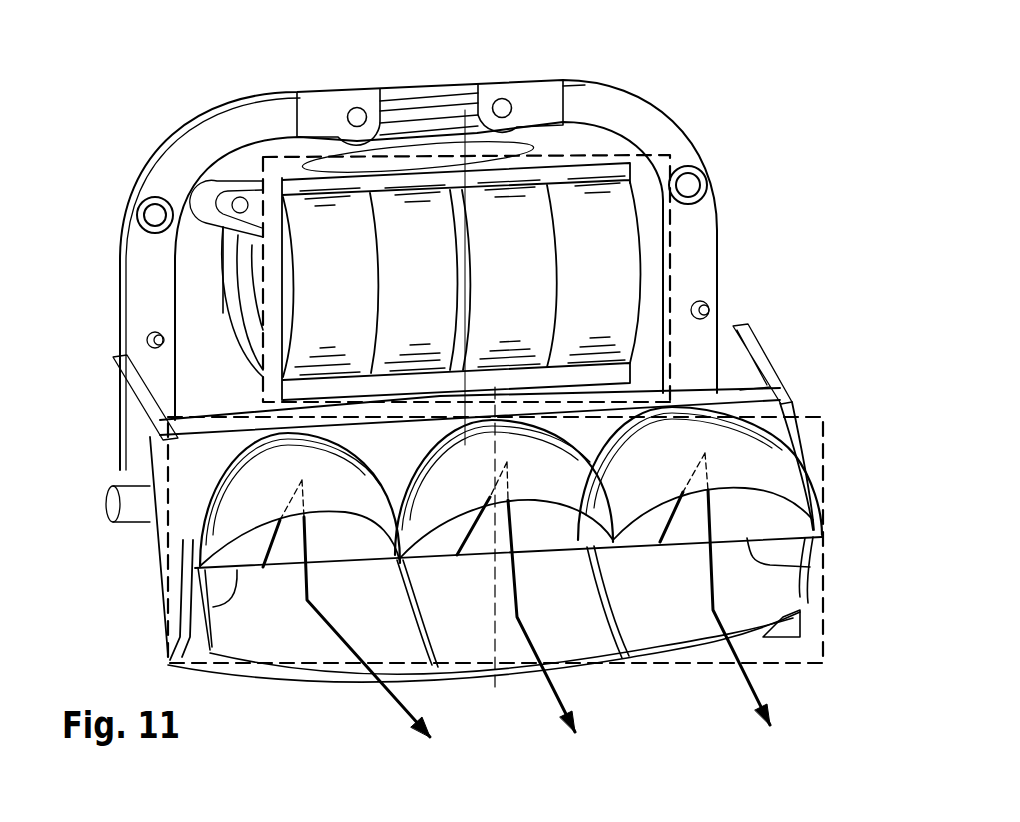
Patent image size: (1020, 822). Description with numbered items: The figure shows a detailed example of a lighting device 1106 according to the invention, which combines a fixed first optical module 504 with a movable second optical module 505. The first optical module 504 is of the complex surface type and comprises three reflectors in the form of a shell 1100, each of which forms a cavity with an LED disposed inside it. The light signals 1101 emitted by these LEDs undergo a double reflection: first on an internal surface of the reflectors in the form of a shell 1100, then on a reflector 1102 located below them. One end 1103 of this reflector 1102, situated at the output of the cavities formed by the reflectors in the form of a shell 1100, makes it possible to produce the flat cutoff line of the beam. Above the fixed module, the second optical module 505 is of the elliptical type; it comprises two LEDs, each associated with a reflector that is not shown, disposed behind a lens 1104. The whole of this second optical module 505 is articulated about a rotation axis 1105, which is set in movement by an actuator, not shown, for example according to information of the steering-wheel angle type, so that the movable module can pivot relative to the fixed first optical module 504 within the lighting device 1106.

The lighting device 1106 is at (147, 122).
The rotation axis 1105 is at (412, 91).
The lens 1104 is at (610, 268).
The second optical module 505 is at (263, 313).
The reflector in the form of a shell 1100 is at (763, 465).
The first optical module 504 is at (170, 570).
The end of the reflector 1103 is at (175, 610).
The reflector 1102 is at (270, 623).
The light signals 1101 is at (388, 704).